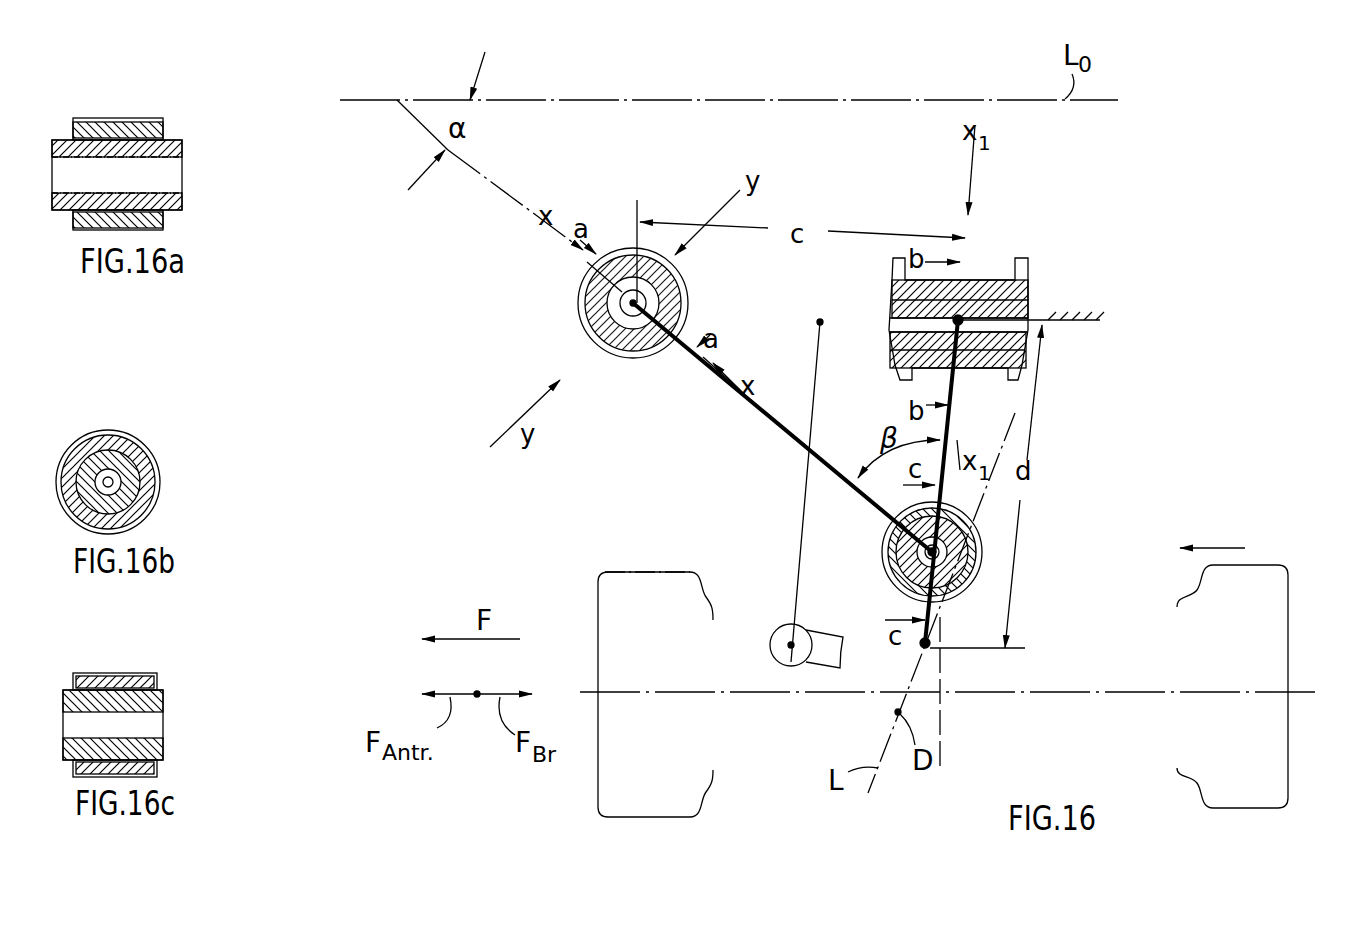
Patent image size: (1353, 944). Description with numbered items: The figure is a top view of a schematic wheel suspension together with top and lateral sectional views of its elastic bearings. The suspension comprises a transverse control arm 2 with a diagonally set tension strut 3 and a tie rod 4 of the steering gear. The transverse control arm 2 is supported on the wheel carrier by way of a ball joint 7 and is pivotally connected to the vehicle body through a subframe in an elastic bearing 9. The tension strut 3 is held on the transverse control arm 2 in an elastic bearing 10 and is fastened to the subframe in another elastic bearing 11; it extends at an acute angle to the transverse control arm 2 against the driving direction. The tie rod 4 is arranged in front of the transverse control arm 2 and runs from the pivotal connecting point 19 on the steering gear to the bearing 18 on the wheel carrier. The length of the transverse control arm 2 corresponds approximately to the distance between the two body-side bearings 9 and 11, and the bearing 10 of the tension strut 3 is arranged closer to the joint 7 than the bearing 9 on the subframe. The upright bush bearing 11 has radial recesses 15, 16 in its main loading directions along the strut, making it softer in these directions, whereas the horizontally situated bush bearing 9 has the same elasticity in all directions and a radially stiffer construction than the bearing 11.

The transverse control arm 2 is at (950, 402).
The tension strut 3 is at (792, 442).
The tie rod 4 is at (797, 555).
The ball joint 7 is at (930, 650).
The elastic bearing 9 is at (960, 318).
The elastic bearing 10 is at (884, 562).
The elastic bearing 11 is at (622, 322).
The radial recess 15 is at (617, 252).
The radial recess 16 is at (655, 355).
The bearing 18 is at (791, 668).
The pivotal connecting point 19 is at (821, 320).